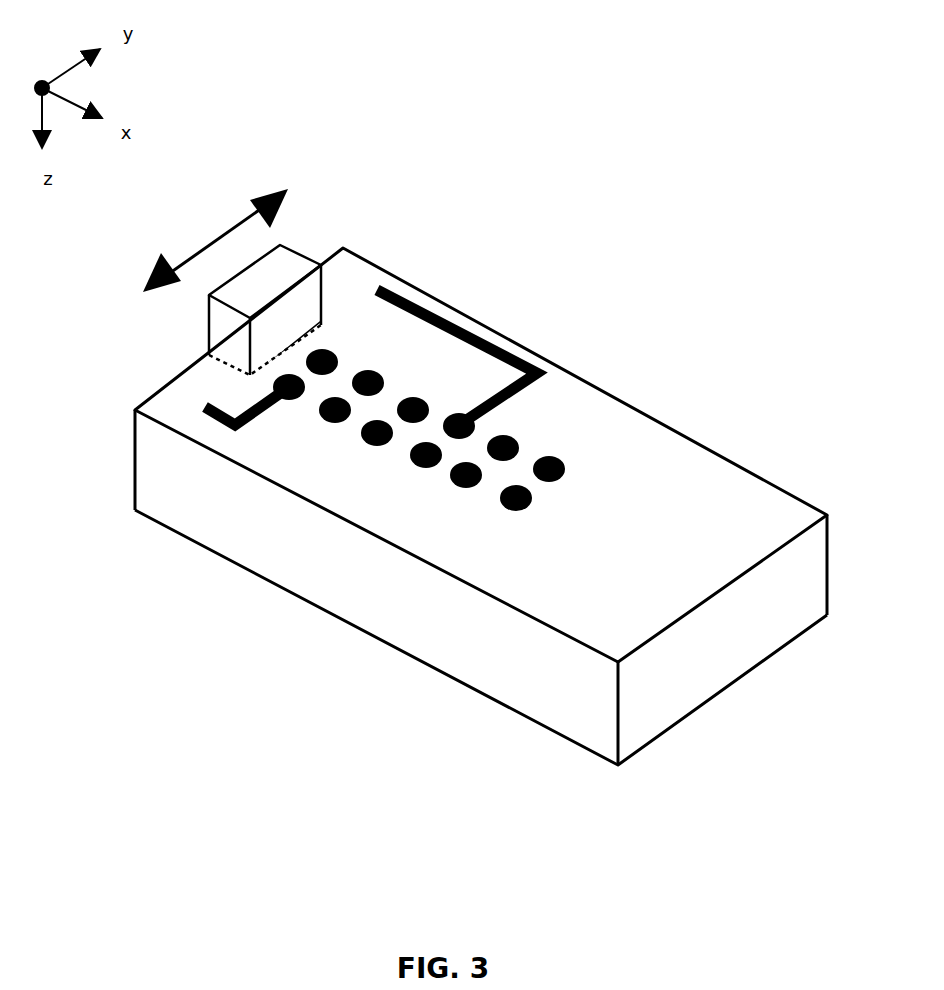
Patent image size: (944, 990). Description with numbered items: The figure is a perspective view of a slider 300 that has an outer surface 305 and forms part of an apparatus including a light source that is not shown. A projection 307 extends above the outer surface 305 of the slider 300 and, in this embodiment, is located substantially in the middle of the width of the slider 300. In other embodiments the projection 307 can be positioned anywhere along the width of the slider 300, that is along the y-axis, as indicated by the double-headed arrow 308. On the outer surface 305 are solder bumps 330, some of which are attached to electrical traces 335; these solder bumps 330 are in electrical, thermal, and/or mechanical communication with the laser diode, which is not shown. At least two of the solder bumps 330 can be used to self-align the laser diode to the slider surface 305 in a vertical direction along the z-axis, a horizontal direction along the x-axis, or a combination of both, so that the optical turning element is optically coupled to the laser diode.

The slider 300 is at (594, 252).
The outer surface 305 is at (666, 478).
The projection 307 is at (298, 252).
The arrow 308 is at (224, 227).
The solder bumps 330 is at (361, 433).
The electrical traces 335 is at (435, 308).